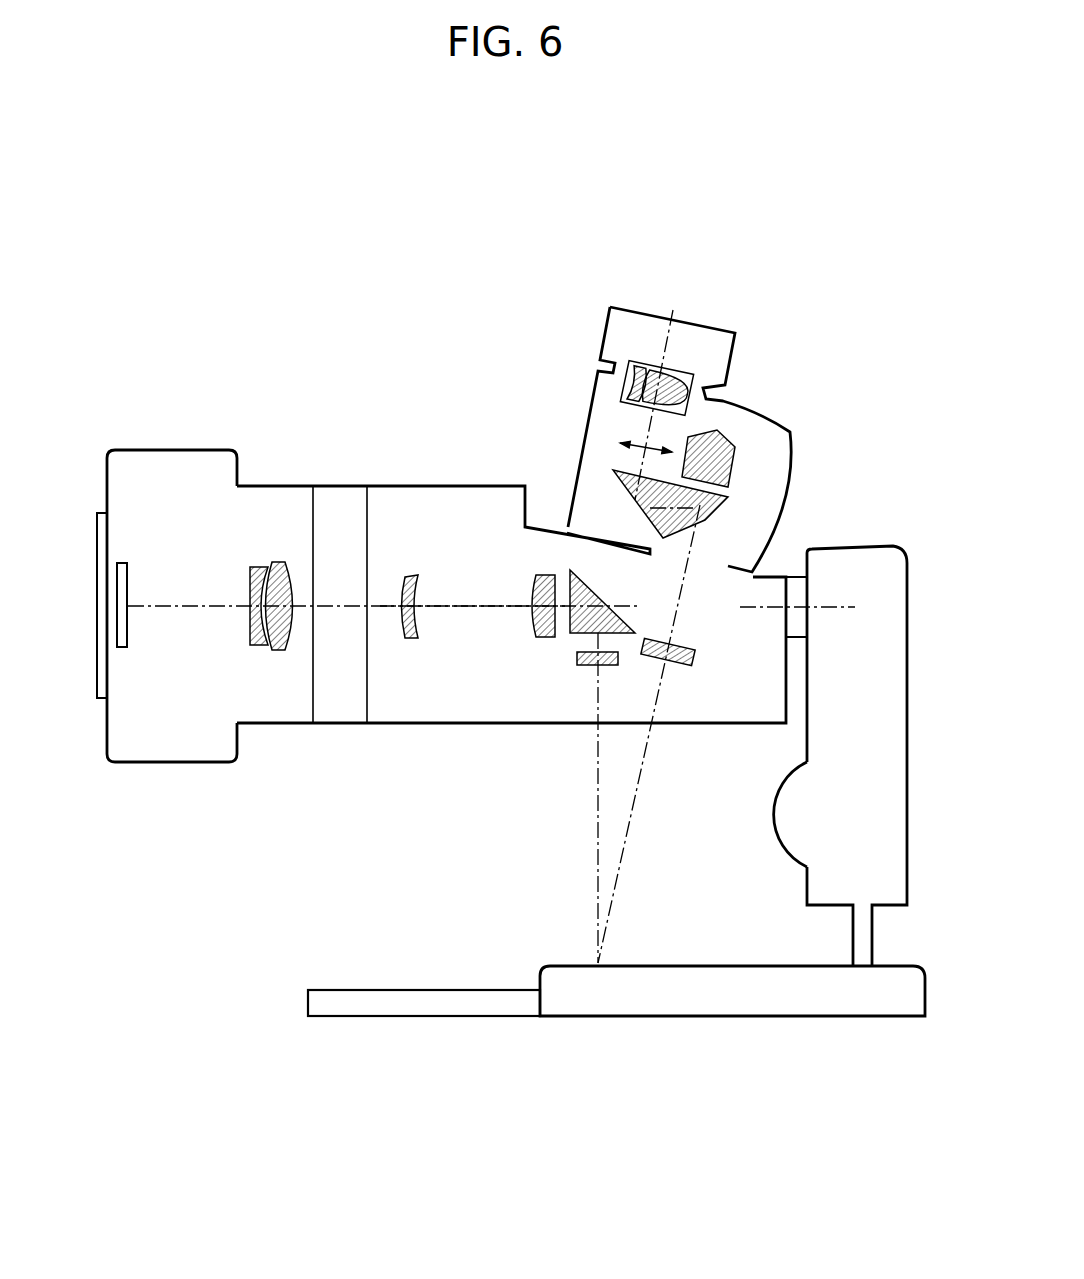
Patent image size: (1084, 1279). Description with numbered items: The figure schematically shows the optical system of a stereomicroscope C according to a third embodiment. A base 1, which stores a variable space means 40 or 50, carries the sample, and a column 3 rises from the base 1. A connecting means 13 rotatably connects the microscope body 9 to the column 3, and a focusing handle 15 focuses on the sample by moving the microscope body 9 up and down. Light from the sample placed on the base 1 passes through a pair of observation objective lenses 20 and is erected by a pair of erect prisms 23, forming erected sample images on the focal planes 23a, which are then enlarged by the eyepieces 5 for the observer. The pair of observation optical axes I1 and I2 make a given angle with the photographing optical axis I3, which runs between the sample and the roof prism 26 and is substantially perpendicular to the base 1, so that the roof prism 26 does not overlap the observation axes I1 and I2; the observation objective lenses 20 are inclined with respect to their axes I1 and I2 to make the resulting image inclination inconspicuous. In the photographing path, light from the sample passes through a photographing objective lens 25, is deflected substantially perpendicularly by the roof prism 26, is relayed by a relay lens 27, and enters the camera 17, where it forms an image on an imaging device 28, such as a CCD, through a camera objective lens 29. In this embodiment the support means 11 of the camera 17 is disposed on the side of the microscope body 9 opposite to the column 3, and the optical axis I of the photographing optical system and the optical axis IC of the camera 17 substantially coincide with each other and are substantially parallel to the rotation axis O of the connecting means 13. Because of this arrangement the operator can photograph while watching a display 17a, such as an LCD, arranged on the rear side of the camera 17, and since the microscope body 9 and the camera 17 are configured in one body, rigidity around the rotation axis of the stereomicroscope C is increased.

The base 1 is at (555, 978).
The column 3 is at (877, 707).
The eyepiece 5 is at (642, 362).
The microscope body 9 is at (472, 497).
The support means 11 is at (340, 503).
The connecting means 13 is at (795, 585).
The focusing handle 15 is at (788, 838).
The camera 17 is at (178, 456).
The display 17a is at (100, 630).
The observation objective lens 20 is at (680, 667).
The erect prism 23 is at (728, 503).
The focal plane 23a is at (632, 437).
The photographing objective lens 25 is at (590, 666).
The roof prism 26 is at (585, 572).
The relay lens 27 is at (533, 577).
The imaging device 28 is at (123, 562).
The camera objective lens 29 is at (268, 660).
The variable space means 40 is at (424, 1053).
The variable space means 50 is at (417, 1019).
The stereomicroscope C is at (733, 323).
The optical axis of the photographing optical system I is at (451, 608).
The optical axis of the camera IC is at (195, 608).
The optical axis of the observation optical system I1 is at (659, 636).
The optical axis of the observation optical system I2 is at (637, 845).
The optical axis of the photographing optical system I3 is at (596, 866).
The rotation axis O is at (837, 612).